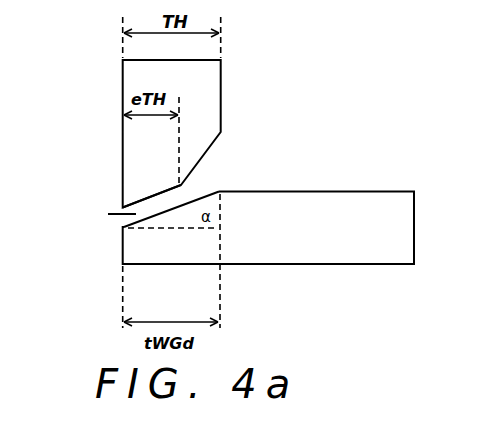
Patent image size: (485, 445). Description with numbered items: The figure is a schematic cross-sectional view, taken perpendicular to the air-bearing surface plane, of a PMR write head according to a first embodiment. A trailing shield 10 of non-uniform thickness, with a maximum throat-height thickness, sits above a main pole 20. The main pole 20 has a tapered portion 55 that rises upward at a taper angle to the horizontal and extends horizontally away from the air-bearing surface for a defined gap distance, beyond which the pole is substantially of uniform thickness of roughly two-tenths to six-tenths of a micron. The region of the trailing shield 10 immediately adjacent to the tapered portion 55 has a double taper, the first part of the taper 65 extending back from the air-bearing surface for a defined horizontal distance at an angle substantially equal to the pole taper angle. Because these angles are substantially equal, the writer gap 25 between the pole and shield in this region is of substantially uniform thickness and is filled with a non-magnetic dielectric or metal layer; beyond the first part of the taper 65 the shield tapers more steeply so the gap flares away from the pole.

The trailing shield 10 is at (203, 82).
The main pole 20 is at (400, 225).
The writer gap 25 is at (108, 214).
The tapered portion 55 is at (197, 200).
The first part of the taper 65 is at (161, 192).